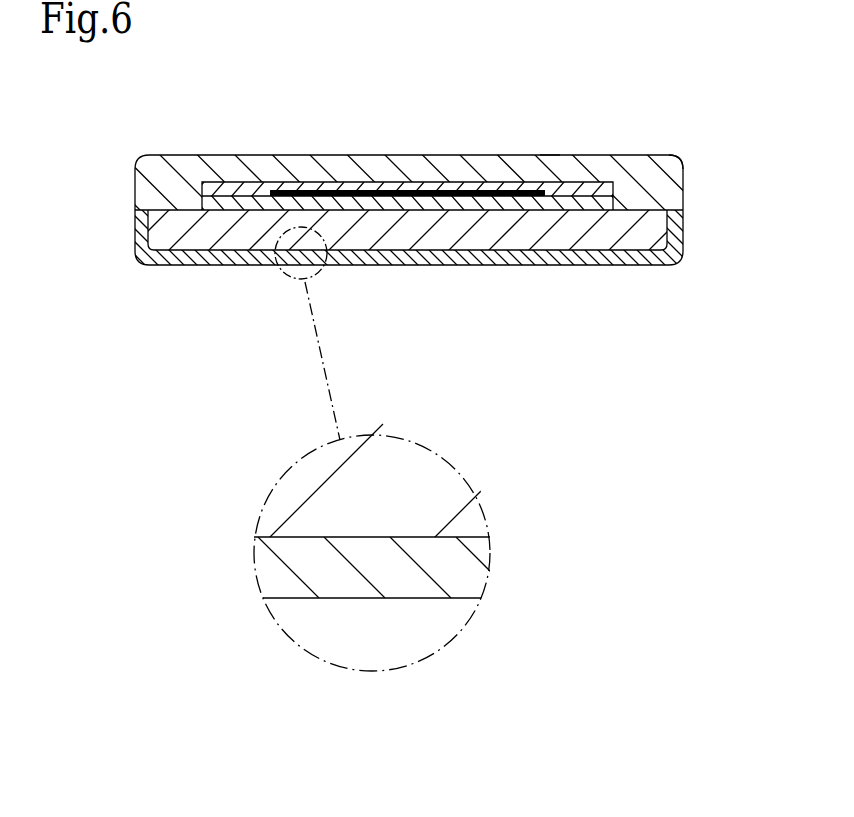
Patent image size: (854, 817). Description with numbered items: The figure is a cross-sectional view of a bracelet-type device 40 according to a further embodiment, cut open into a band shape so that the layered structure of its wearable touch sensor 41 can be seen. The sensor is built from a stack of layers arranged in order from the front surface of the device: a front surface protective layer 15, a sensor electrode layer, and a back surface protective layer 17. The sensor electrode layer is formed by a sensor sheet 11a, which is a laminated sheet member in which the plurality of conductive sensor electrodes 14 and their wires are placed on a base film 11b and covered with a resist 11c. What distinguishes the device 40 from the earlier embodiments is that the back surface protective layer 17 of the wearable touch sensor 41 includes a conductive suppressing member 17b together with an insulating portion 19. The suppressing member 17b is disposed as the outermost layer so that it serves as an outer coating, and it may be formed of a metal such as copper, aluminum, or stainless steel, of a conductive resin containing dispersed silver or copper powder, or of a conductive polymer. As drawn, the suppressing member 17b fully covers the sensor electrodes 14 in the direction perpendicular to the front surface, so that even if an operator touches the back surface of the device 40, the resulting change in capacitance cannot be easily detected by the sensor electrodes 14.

The bracelet-type device 40 is at (667, 140).
The wearable touch sensor 41 is at (212, 154).
The front surface protective layer 15 is at (548, 156).
The sensor sheet 11a is at (298, 181).
The resist 11c is at (505, 195).
The sensor electrode 14 is at (402, 190).
The base film 11b is at (592, 213).
The insulating portion 19 is at (500, 245).
The back surface protective layer 17 is at (500, 349).
The conductive suppressing member 17b is at (438, 256).